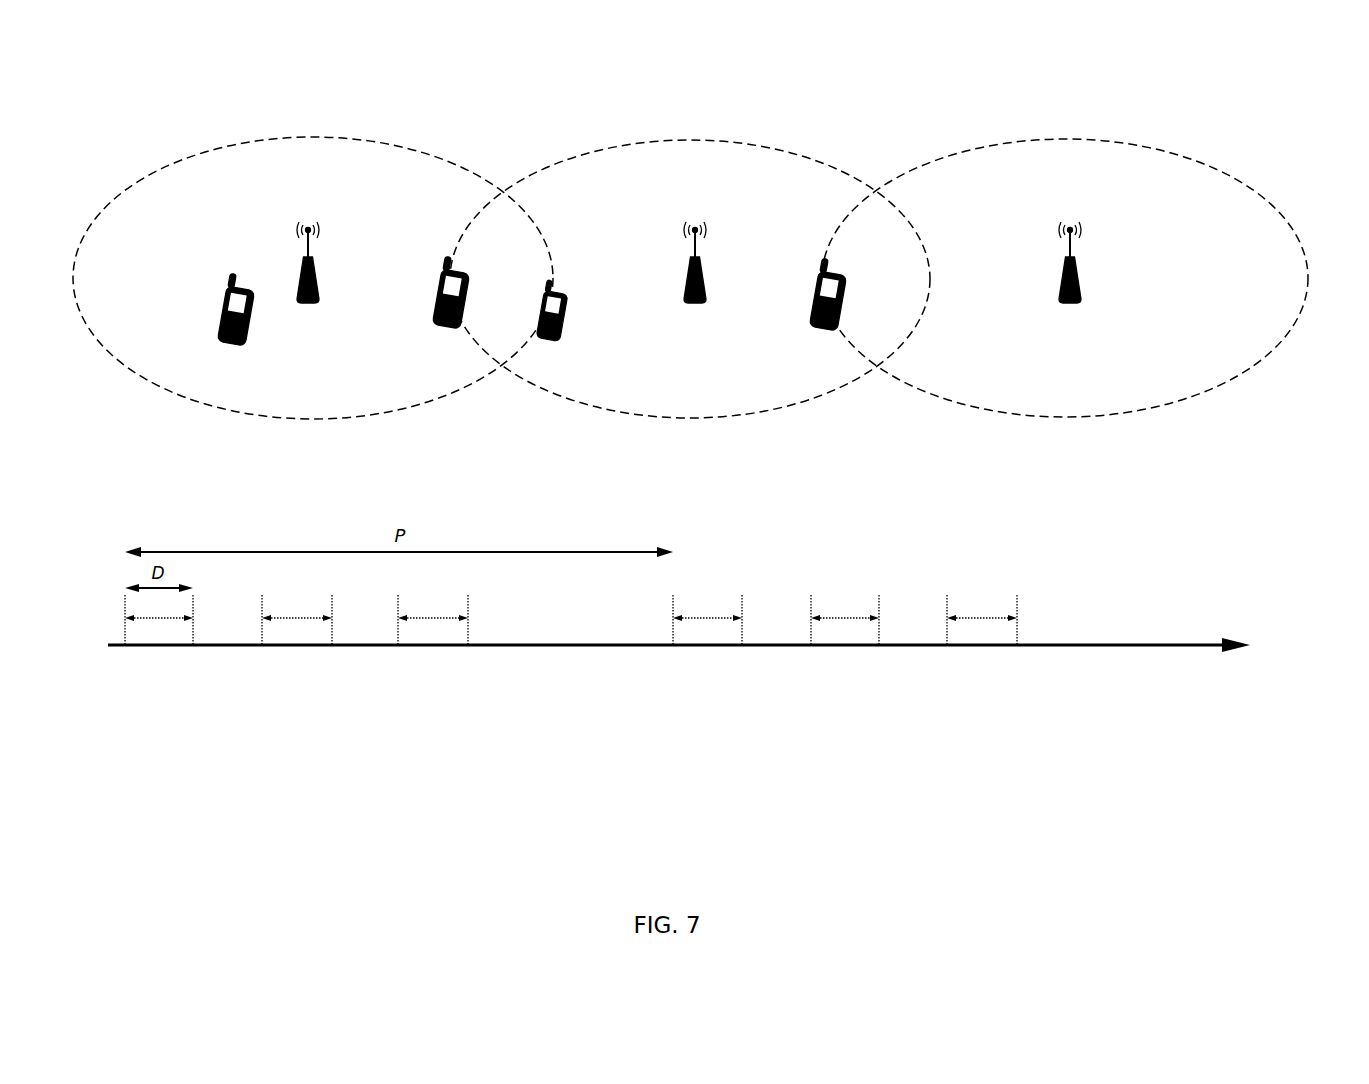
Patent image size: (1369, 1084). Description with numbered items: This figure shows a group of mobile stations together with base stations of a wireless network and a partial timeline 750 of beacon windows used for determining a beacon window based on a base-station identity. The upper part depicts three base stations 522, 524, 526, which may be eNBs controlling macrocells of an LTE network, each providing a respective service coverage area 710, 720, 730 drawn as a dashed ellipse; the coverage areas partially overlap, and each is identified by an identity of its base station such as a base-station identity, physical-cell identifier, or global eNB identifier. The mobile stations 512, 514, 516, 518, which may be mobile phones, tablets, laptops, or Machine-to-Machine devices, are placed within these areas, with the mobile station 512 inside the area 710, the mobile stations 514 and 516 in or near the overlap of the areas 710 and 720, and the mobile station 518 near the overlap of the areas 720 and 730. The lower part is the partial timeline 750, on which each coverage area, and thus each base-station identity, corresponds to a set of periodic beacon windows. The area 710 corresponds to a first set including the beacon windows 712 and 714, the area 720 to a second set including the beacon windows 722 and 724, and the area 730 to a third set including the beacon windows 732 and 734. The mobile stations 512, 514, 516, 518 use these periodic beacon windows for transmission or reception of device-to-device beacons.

The service coverage area 710 is at (413, 152).
The service coverage area 720 is at (698, 140).
The service coverage area 730 is at (1065, 140).
The mobile station 512 is at (236, 330).
The mobile station 514 is at (451, 310).
The mobile station 516 is at (553, 329).
The mobile station 518 is at (828, 313).
The base station 522 is at (308, 279).
The base station 524 is at (695, 279).
The base station 526 is at (1070, 279).
The beacon window 712 is at (162, 620).
The beacon window 722 is at (298, 620).
The beacon window 732 is at (435, 620).
The beacon window 714 is at (710, 620).
The beacon window 724 is at (845, 620).
The beacon window 734 is at (982, 620).
The partial timeline 750 is at (1175, 640).